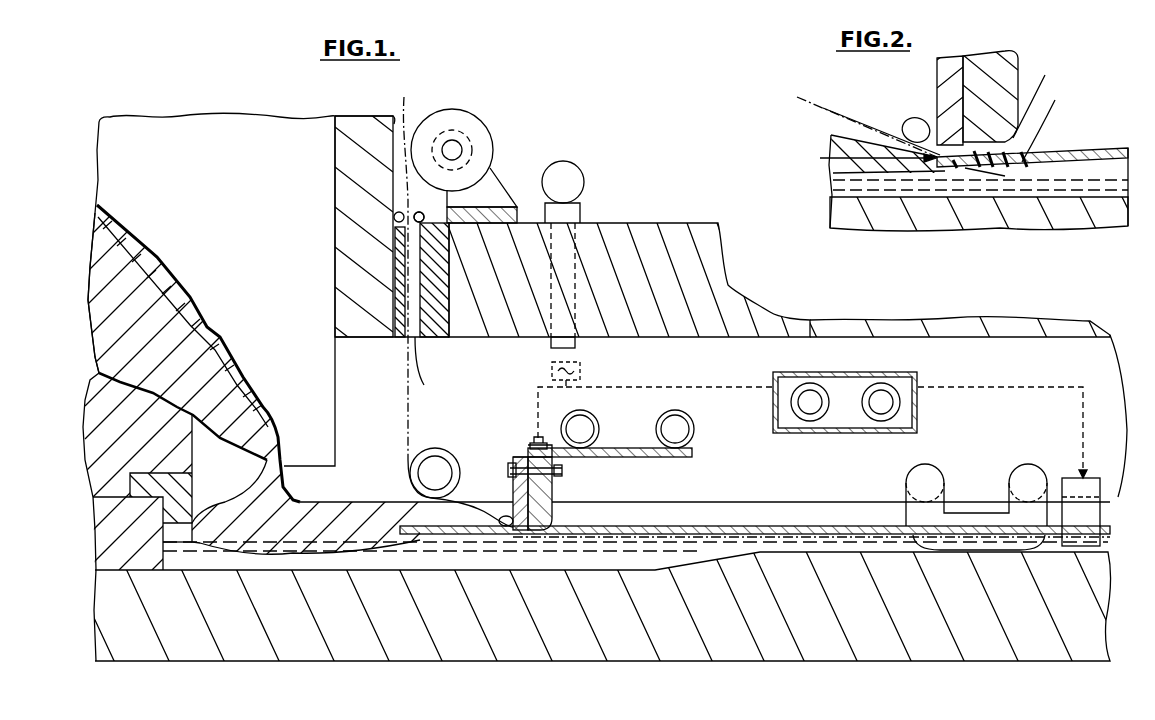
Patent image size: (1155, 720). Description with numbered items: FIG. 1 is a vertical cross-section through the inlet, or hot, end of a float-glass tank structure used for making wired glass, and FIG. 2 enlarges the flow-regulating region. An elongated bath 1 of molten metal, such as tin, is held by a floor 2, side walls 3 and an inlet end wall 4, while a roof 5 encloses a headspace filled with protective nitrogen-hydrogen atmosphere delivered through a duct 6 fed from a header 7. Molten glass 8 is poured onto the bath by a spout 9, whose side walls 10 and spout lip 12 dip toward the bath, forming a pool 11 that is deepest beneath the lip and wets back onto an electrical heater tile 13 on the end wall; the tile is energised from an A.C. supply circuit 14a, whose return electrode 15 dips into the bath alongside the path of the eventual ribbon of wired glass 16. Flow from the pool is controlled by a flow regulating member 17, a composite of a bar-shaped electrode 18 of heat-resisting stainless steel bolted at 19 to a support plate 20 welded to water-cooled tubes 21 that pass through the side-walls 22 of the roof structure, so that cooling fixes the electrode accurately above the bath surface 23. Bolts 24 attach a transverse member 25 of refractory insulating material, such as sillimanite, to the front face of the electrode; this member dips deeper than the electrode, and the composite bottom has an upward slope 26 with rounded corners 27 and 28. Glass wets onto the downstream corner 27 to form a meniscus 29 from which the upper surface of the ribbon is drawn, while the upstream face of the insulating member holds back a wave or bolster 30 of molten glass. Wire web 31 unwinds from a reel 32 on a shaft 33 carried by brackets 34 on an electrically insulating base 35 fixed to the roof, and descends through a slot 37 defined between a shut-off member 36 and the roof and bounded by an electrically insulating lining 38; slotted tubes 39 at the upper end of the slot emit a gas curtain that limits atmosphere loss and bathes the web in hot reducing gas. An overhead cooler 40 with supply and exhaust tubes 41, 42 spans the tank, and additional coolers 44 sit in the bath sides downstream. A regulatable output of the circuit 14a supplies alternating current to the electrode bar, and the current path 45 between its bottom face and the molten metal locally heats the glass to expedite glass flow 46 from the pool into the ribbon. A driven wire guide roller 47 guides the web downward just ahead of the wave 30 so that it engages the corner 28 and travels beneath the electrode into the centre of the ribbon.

In FIG. 1, the bath of molten metal 1 is at (693, 552).
In FIG. 1, the floor 2 is at (1022, 625).
In FIG. 1, the side walls 3 is at (737, 500).
In FIG. 1, the end wall 4 is at (115, 514).
In FIG. 1, the roof 5 is at (636, 231).
In FIG. 1, the duct 6 is at (572, 213).
In FIG. 1, the header 7 is at (570, 177).
In FIG. 1, the molten glass 8 is at (133, 242).
In FIG. 1, the spout 9 is at (108, 328).
In FIG. 1, the side walls of the spout 10 is at (242, 128).
In FIG. 1, the pool of molten glass 11 is at (330, 522).
In FIG. 1, the spout lip 12 is at (258, 430).
In FIG. 1, the electrical heater tile 13 is at (180, 495).
In FIG. 1, the A.C. supply circuit 14a is at (582, 370).
In FIG. 1, the return electrode 15 is at (1090, 486).
In FIG. 1, the ribbon of wired glass 16 is at (817, 527).
In FIG. 2, the ribbon of wired glass 16 is at (1098, 150).
In FIG. 1, the flow regulating member 17 is at (520, 432).
In FIG. 1, the bar-shaped electrode 18 is at (555, 492).
In FIG. 2, the bar-shaped electrode 18 is at (1000, 65).
In FIG. 1, the bolt 19 is at (536, 440).
In FIG. 1, the support plate 20 is at (616, 452).
In FIG. 1, the water-cooled tubes 21 is at (592, 417).
In FIG. 1, the side-walls of the roof structure 22 is at (752, 340).
In FIG. 1, the bath surface 23 is at (583, 540).
In FIG. 2, the bath surface 23 is at (852, 190).
In FIG. 1, the bolts 24 is at (510, 470).
In FIG. 1, the transverse member of refractory electrically insulating material 25 is at (514, 492).
In FIG. 2, the transverse member of refractory electrically insulating material 25 is at (957, 70).
In FIG. 2, the upward slope of the bottom surface 26 is at (1036, 95).
In FIG. 2, the downstream rounded corner 27 is at (1023, 123).
In FIG. 2, the upstream rounded corner 28 is at (940, 135).
In FIG. 2, the meniscus 29 is at (1030, 150).
In FIG. 1, the wave or bolster of molten glass 30 is at (315, 523).
In FIG. 2, the wave or bolster of molten glass 30 is at (908, 125).
In FIG. 1, the wire web 31 is at (410, 418).
In FIG. 2, the wire web 31 is at (827, 112).
In FIG. 1, the reel of wire web 32 is at (478, 128).
In FIG. 1, the shaft 33 is at (456, 150).
In FIG. 1, the brackets 34 is at (486, 185).
In FIG. 1, the electrically insulating base 35 is at (422, 203).
In FIG. 1, the shut-off member 36 is at (358, 130).
In FIG. 1, the slot 37 is at (431, 367).
In FIG. 1, the electrically insulating lining 38 is at (397, 330).
In FIG. 1, the slotted tubes 39 is at (394, 217).
In FIG. 1, the overhead cooler 40 is at (858, 430).
In FIG. 1, the supply tube 41 is at (806, 396).
In FIG. 1, the exhaust tube 42 is at (892, 396).
In FIG. 1, the additional coolers 44 is at (1030, 480).
In FIG. 2, the current path 45 is at (1005, 176).
In FIG. 2, the glass flow 46 is at (855, 160).
In FIG. 1, the driven wire guide roller 47 is at (447, 456).